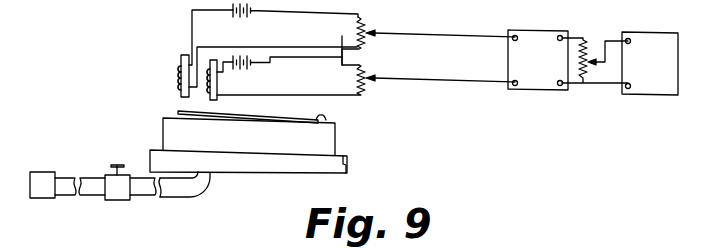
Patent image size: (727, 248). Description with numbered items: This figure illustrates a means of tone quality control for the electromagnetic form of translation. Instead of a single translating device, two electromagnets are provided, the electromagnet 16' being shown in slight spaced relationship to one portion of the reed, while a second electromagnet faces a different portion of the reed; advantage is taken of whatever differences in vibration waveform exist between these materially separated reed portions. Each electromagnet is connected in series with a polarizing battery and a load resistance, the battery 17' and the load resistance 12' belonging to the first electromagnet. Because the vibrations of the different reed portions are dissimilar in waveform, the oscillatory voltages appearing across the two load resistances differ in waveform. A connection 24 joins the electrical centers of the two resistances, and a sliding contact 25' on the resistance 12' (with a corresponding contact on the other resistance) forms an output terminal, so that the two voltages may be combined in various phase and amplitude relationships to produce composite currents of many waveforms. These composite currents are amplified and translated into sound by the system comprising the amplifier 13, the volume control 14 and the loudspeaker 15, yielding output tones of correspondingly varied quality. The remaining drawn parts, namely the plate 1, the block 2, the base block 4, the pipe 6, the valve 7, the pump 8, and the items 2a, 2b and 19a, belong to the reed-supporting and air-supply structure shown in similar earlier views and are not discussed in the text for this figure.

The plate 1 is at (225, 113).
The block 2 is at (327, 141).
The base block 4 is at (347, 165).
The pipe 6 is at (212, 183).
The valve 7 is at (110, 175).
The pump 8 is at (40, 172).
The load resistance 12' is at (377, 38).
The amplifier 13 is at (539, 92).
The volume control 14 is at (591, 74).
The loudspeaker 15 is at (647, 95).
The electromagnet 16' is at (242, 53).
The polarizing battery 17' is at (295, 20).
The connection 24 is at (342, 41).
The sliding contact 25' is at (440, 41).
The block part 2a is at (205, 247).
The block part 2b is at (161, 240).
The element 19a is at (250, 233).